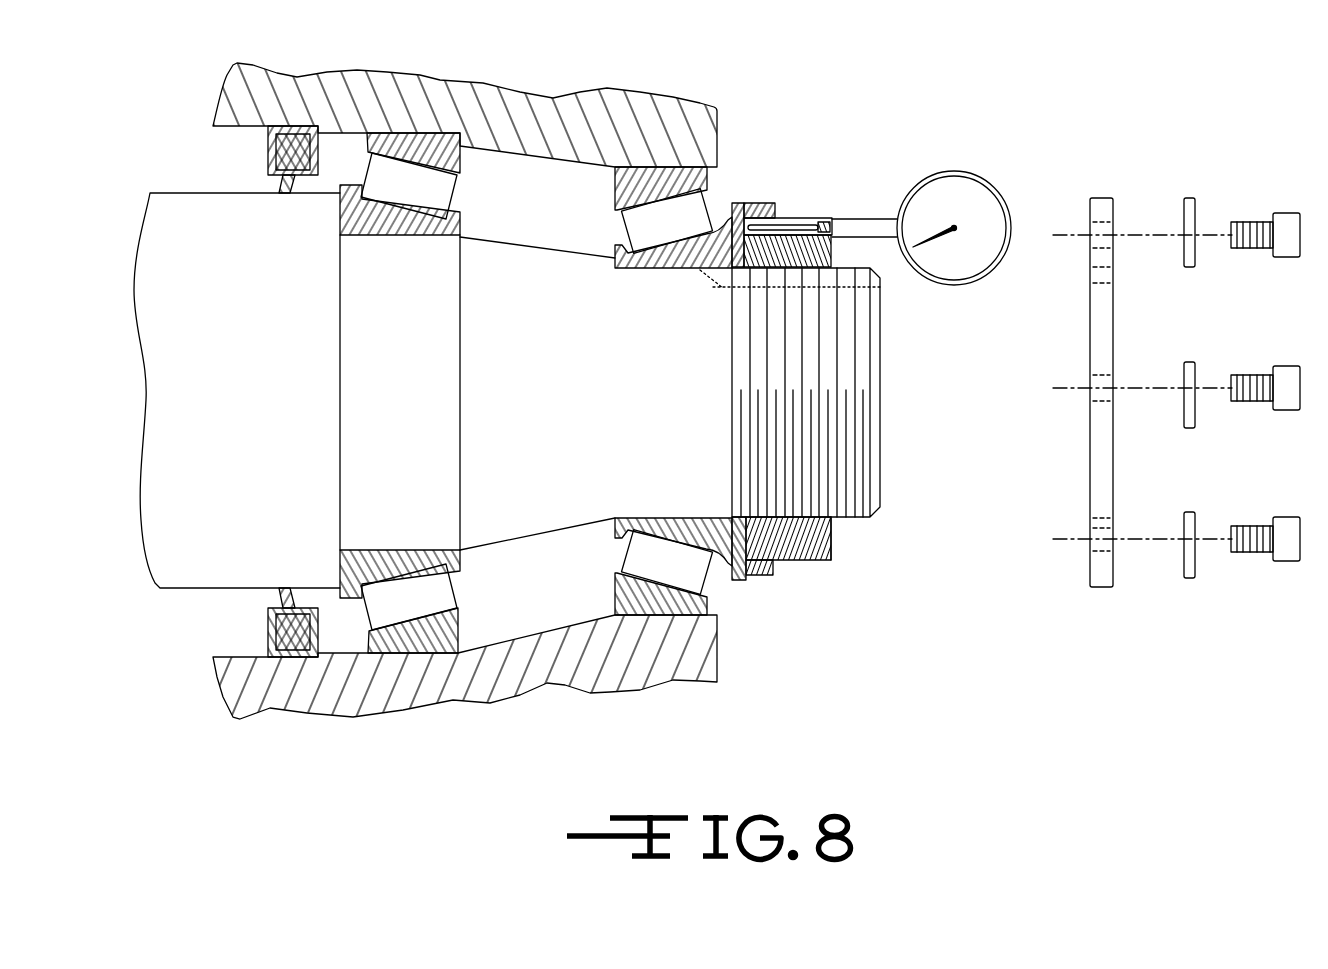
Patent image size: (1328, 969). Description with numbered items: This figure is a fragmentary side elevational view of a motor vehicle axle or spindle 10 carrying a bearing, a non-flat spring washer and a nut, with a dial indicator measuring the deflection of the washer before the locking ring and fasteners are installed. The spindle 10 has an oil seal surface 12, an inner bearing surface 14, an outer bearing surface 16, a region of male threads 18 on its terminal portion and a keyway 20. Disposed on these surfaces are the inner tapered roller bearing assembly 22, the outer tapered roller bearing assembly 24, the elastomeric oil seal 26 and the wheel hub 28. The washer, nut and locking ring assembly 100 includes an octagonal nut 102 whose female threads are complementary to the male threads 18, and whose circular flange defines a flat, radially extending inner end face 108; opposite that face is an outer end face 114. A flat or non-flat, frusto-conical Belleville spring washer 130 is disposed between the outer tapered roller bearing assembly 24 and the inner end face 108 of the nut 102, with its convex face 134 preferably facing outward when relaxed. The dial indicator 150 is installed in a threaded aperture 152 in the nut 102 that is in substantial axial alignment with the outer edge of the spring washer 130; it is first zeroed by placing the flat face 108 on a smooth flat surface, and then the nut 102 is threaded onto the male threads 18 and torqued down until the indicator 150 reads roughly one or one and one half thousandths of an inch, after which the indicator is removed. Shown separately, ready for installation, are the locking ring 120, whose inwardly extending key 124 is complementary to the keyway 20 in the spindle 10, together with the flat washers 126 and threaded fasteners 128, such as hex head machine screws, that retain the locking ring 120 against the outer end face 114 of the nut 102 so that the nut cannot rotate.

The spindle 10 is at (788, 129).
The oil seal surface 12 is at (178, 190).
The inner bearing surface 14 is at (397, 236).
The outer bearing surface 16 is at (668, 266).
The region of male threads 18 is at (862, 374).
The keyway 20 is at (723, 288).
The inner tapered roller bearing assembly 22 is at (393, 177).
The outer tapered roller bearing assembly 24 is at (660, 214).
The elastomeric oil seal 26 is at (267, 628).
The wheel hub 28 is at (507, 112).
The washer, nut and locking ring assembly 100 is at (1013, 104).
The octagonal nut 102 is at (798, 546).
The inner end face 108 is at (750, 581).
The outer end face 114 is at (832, 535).
The locking ring 120 is at (1101, 197).
The key 124 is at (1100, 276).
The flat washers 126 is at (1196, 520).
The threaded fasteners 128 is at (1278, 366).
The spring washer 130 is at (743, 582).
The convex face 134 is at (758, 203).
The dial indicator 150 is at (933, 172).
The threaded aperture 152 is at (797, 214).